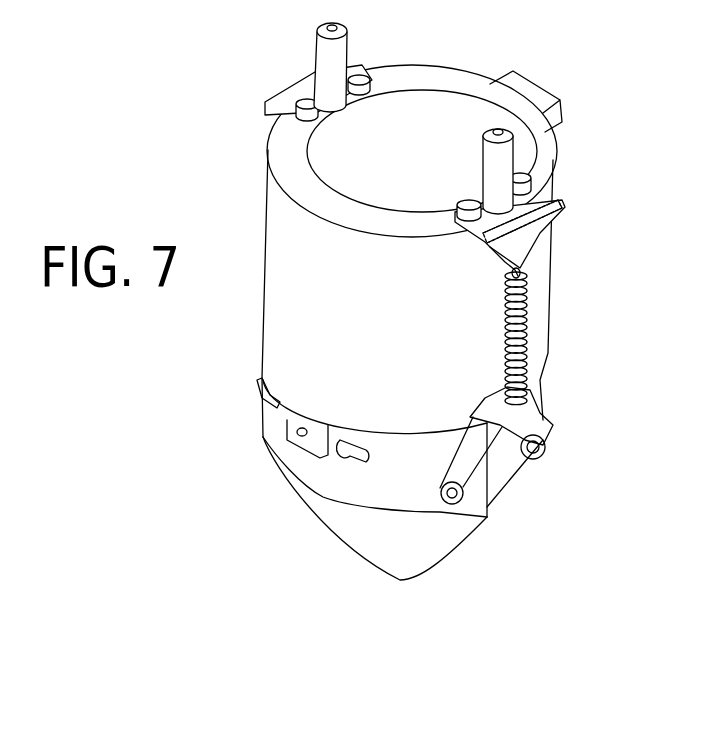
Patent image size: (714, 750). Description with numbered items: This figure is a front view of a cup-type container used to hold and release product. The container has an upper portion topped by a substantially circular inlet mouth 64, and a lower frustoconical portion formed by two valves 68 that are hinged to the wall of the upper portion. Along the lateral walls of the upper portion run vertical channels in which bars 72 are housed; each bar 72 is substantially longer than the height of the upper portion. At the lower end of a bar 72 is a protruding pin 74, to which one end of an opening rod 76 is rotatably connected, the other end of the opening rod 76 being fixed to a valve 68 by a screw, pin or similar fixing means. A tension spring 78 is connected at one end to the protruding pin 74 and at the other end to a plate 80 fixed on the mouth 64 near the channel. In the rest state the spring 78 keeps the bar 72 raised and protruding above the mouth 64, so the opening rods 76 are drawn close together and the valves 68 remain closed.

The inlet mouth 64 is at (315, 148).
The valve 68 is at (400, 522).
The bar 72 is at (556, 176).
The protruding pin 74 is at (544, 430).
The opening rod 76 is at (518, 437).
The tension spring 78 is at (527, 355).
The plate 80 is at (558, 196).